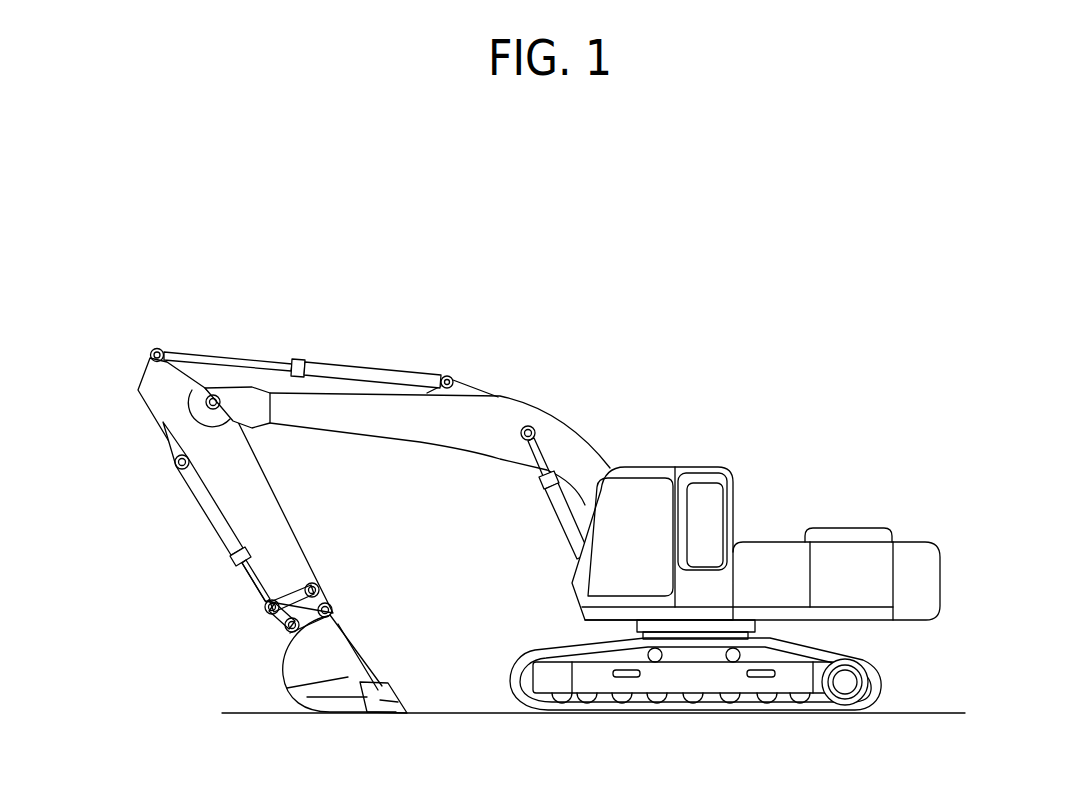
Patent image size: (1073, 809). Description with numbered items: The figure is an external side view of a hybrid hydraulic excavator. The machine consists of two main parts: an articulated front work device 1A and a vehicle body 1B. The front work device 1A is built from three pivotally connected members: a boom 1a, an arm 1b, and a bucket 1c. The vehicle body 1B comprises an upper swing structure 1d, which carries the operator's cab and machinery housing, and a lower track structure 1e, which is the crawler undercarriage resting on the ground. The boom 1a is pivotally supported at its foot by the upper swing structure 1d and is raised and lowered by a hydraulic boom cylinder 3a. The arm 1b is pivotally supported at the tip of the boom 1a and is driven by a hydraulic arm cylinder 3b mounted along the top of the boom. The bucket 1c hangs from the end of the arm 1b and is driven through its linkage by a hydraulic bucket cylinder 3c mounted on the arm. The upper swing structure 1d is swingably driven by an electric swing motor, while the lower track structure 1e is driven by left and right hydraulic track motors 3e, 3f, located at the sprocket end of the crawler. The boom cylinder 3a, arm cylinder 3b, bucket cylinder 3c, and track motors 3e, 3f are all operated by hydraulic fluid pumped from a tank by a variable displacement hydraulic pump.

The articulated front work device 1A is at (408, 327).
The vehicle body 1B is at (961, 590).
The boom 1a is at (522, 410).
The arm 1b is at (263, 507).
The bucket 1c is at (283, 678).
The upper swing structure 1d is at (852, 527).
The lower track structure 1e is at (896, 681).
The boom cylinder 3a is at (555, 503).
The arm cylinder 3b is at (372, 366).
The bucket cylinder 3c is at (203, 510).
The left hydraulic motor (track motor) 3e is at (842, 688).
The right hydraulic motor (track motor) 3f is at (842, 688).